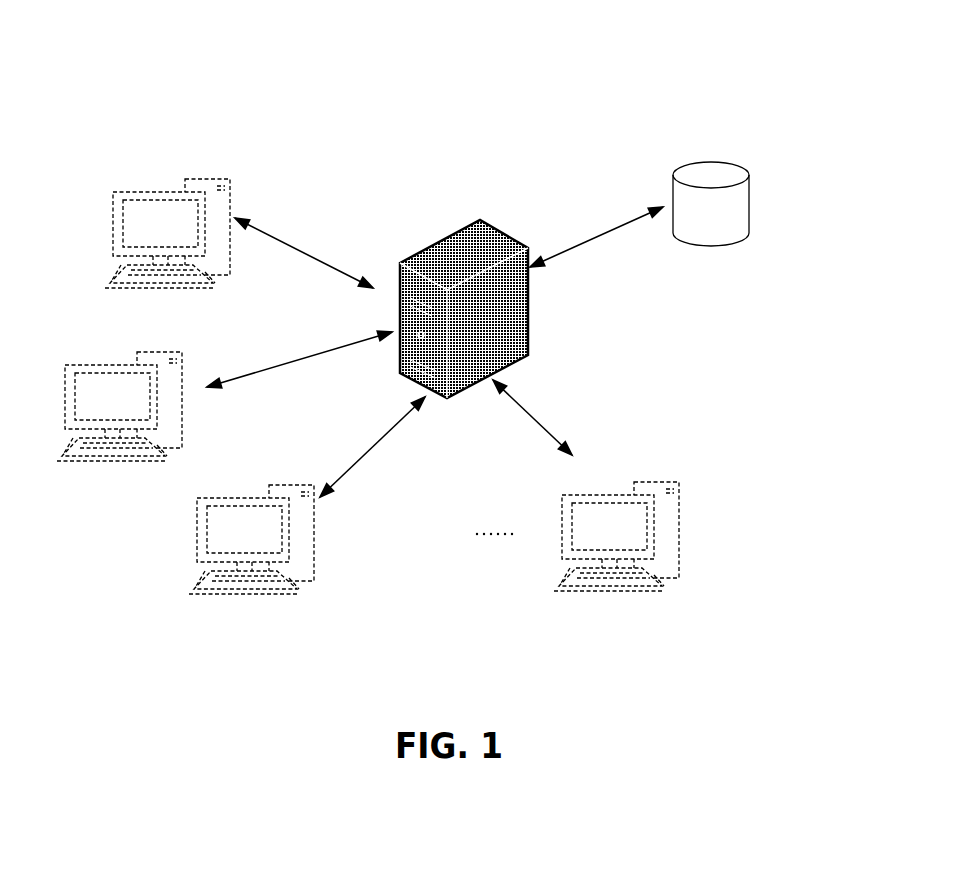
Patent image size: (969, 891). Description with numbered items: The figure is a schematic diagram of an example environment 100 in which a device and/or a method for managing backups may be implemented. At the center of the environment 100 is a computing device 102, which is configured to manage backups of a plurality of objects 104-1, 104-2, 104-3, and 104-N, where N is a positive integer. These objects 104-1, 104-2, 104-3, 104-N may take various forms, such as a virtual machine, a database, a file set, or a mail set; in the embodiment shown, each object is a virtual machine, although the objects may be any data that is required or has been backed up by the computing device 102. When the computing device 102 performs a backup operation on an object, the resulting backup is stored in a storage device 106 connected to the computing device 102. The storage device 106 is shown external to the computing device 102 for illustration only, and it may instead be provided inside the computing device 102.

The example environment 100 is at (263, 58).
The computing device 102 is at (482, 222).
The object 104-1 is at (222, 185).
The object 104-2 is at (182, 352).
The object 104-3 is at (313, 517).
The object 104-N is at (681, 480).
The storage device 106 is at (745, 165).